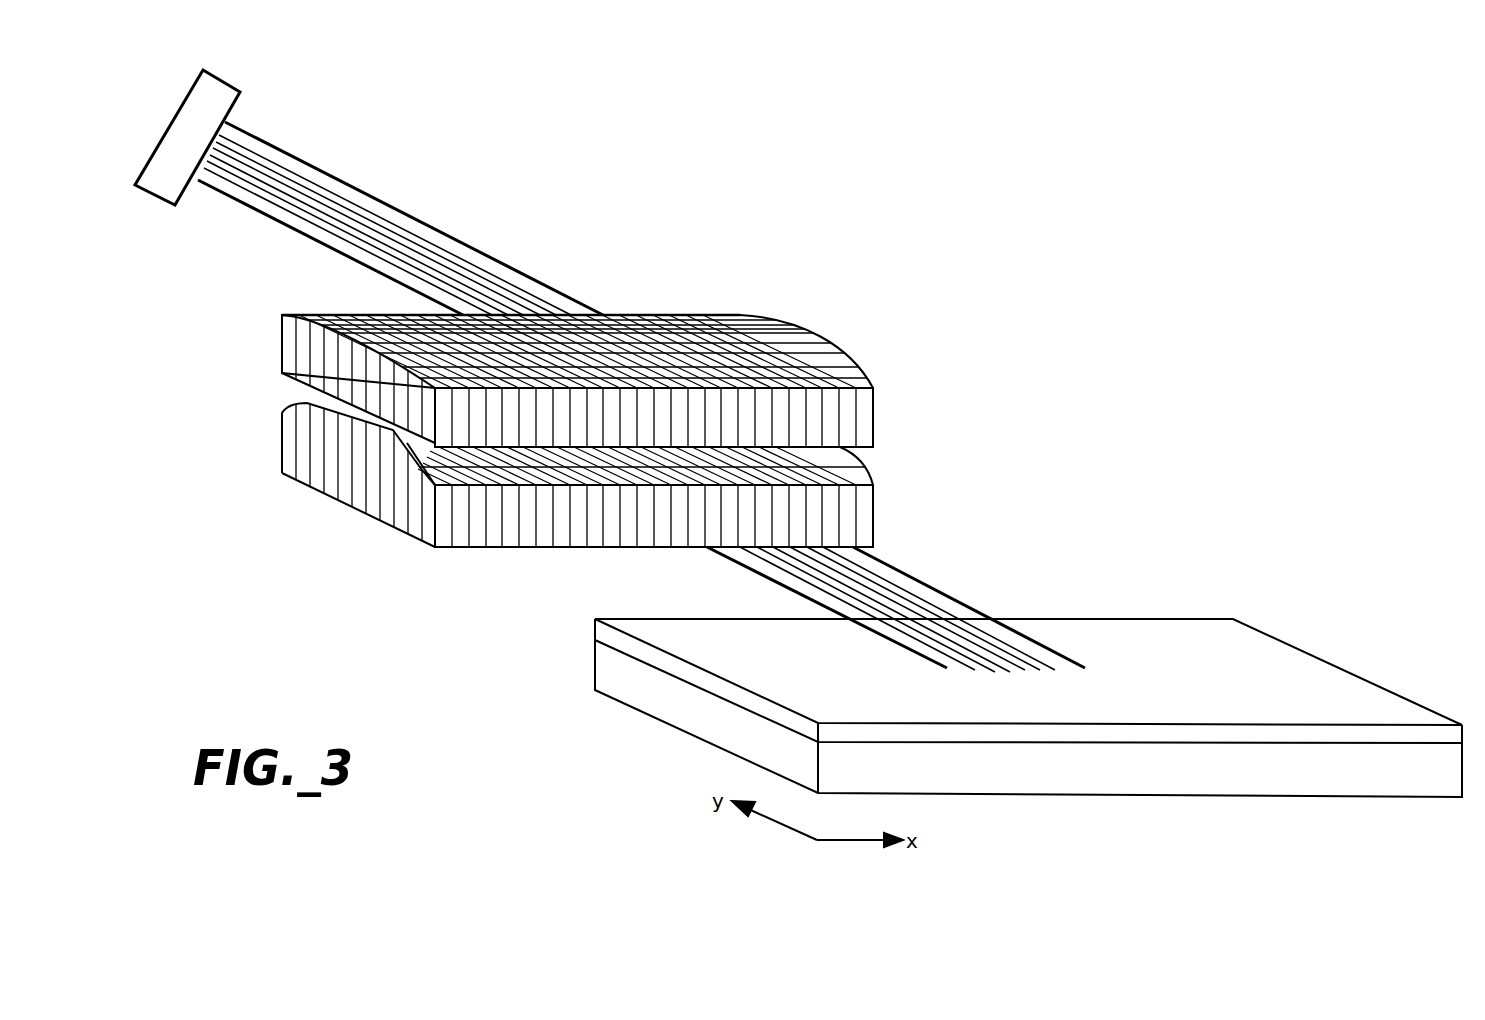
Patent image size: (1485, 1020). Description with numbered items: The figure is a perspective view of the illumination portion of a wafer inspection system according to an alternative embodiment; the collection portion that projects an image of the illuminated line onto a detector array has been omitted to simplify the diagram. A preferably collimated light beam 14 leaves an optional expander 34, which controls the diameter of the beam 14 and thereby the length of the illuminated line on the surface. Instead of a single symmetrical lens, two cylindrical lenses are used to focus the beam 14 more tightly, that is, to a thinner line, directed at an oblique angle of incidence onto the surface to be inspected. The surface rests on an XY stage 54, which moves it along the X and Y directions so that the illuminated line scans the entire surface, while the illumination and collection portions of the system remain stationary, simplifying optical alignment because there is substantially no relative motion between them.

The expander 34 is at (222, 74).
The collimated light beam 14 is at (281, 146).
The XY stage 54 is at (1398, 788).